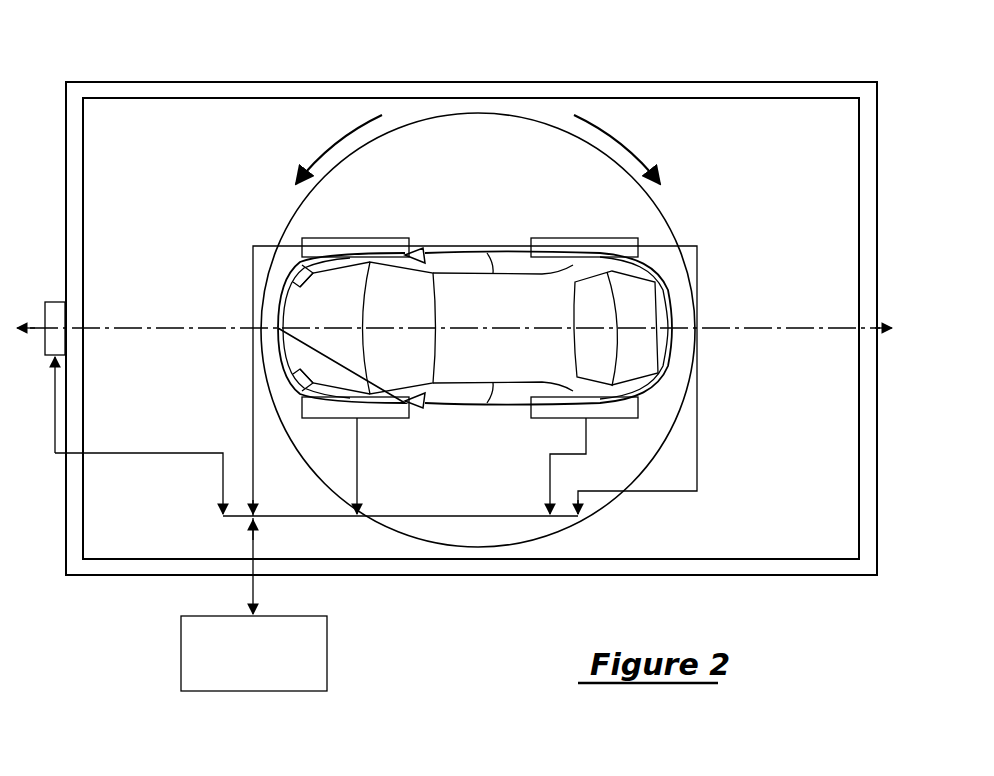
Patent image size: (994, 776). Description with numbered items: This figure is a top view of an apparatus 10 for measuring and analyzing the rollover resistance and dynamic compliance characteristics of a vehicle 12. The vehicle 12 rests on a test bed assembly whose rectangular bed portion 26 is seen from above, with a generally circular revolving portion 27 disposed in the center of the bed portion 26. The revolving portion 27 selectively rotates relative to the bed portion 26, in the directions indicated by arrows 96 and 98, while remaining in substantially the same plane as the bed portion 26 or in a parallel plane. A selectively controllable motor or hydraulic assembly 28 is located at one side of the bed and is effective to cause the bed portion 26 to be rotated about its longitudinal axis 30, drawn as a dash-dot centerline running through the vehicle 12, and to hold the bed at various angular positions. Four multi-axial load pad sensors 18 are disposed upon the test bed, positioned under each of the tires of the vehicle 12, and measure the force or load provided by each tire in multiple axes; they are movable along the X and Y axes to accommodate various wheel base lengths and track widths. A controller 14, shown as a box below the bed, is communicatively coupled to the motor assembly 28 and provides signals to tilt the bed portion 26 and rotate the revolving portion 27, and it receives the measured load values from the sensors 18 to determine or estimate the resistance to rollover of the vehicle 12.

The apparatus 10 is at (87, 52).
The vehicle 12 is at (503, 316).
The controller 14 is at (260, 676).
The load pad sensors 18 is at (378, 238).
The bed portion 26 is at (162, 177).
The revolving portion 27 is at (484, 157).
The motor or hydraulic assembly 28 is at (58, 302).
The longitudinal axis 30 is at (768, 328).
The arrow 96 is at (337, 141).
The arrow 98 is at (615, 141).